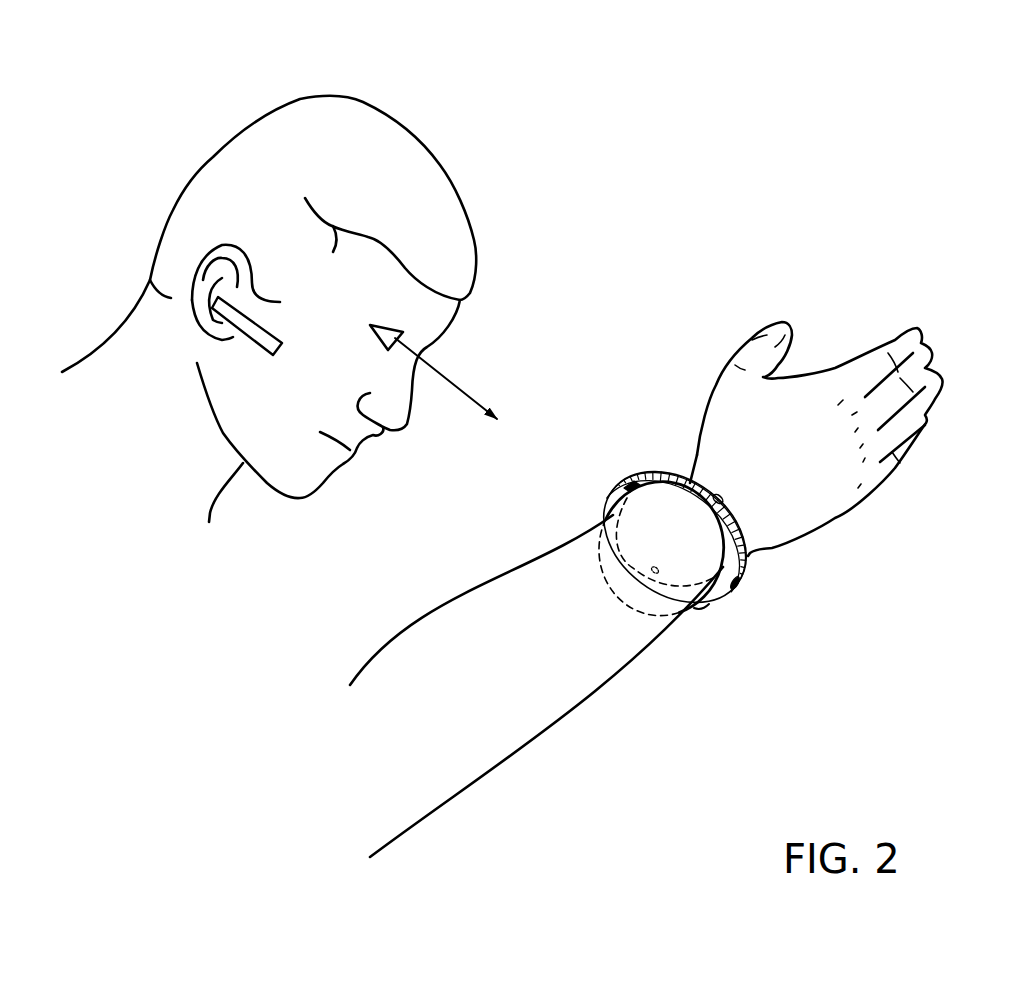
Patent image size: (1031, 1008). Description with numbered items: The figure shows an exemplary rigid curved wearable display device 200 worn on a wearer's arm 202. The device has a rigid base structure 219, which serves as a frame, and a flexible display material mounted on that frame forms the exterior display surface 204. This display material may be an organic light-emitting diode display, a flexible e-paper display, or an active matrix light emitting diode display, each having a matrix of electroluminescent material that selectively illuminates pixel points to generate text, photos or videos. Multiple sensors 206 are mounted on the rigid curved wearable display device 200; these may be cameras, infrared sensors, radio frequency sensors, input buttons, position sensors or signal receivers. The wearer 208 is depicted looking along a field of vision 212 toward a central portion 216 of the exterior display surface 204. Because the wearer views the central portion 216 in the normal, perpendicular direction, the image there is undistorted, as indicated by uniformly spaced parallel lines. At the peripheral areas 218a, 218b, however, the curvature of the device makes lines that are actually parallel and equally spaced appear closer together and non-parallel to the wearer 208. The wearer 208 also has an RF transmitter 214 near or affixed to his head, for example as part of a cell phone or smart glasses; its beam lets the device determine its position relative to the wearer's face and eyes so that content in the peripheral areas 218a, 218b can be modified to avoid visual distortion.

The rigid curved wearable display device 200 is at (812, 553).
The wearer's arm 202 is at (545, 765).
The exterior display surface 204 is at (733, 530).
The sensors 206 is at (620, 485).
The wearer 208 is at (203, 150).
The field of vision 212 is at (473, 378).
The RF transmitter 214 is at (242, 337).
The central portion 216 is at (675, 483).
The peripheral area 218a is at (633, 483).
The peripheral area 218b is at (745, 558).
The rigid base structure 219 is at (706, 608).